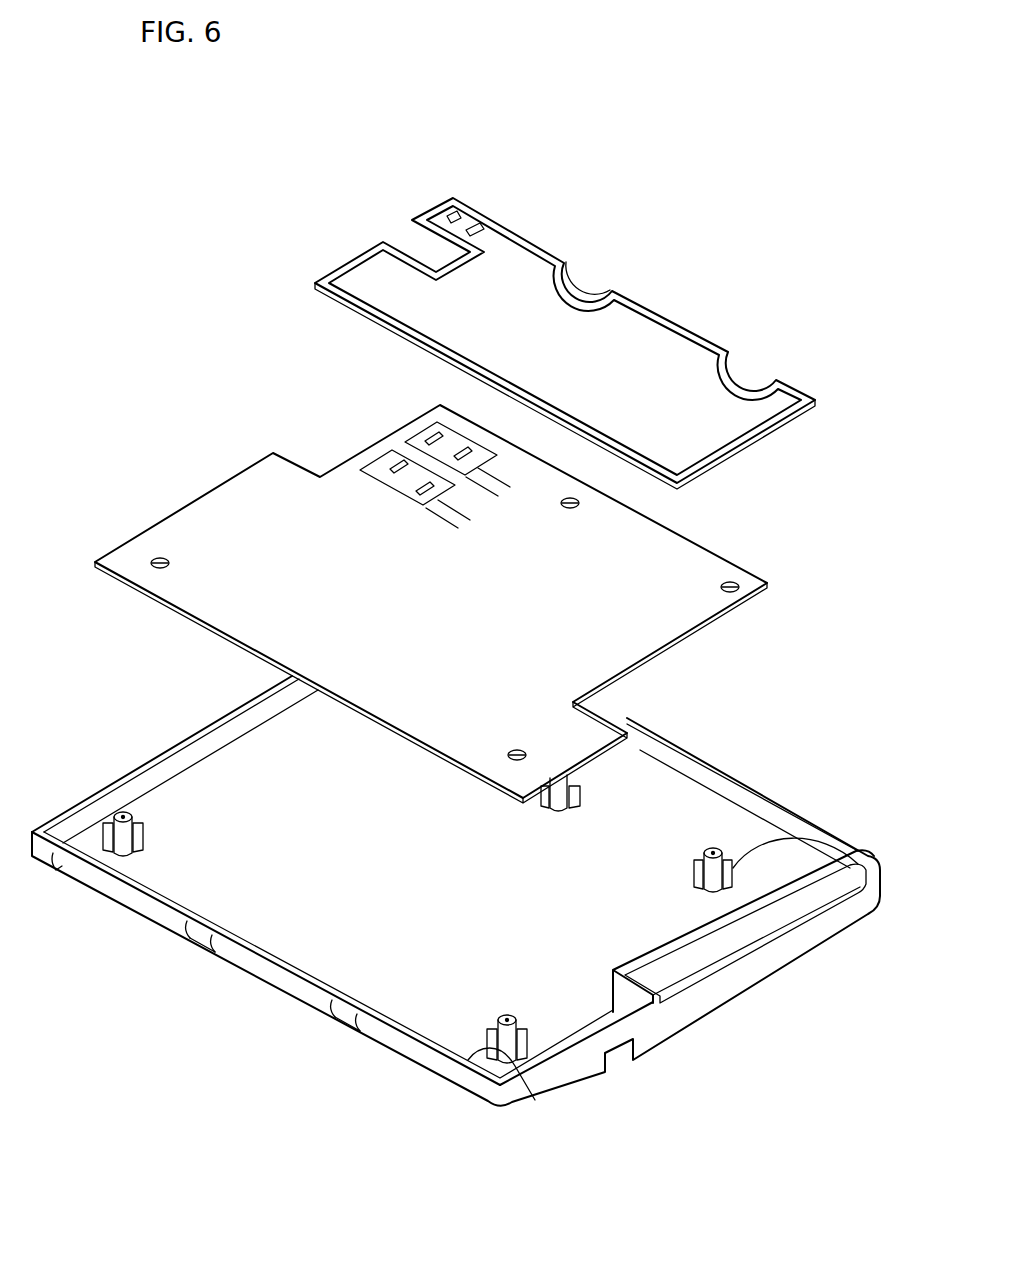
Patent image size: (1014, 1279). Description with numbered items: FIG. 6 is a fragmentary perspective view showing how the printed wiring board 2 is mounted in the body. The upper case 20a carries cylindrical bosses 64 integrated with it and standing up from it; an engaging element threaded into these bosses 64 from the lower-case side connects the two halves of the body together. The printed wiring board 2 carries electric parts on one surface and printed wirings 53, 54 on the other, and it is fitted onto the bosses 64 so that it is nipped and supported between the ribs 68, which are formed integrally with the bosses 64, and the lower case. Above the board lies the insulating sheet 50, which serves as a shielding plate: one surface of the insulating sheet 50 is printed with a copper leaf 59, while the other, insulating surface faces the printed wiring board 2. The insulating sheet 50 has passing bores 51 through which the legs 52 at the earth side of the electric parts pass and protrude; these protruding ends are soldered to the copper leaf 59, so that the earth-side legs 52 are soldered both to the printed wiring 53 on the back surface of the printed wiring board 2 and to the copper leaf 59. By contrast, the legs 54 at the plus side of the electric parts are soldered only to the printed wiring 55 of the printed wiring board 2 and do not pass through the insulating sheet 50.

The printed wiring board 2 is at (742, 567).
The upper case 20a is at (668, 1027).
The insulating sheet 50 is at (664, 311).
The passing bores 51 is at (453, 213).
The legs at the earth side 52 is at (430, 433).
The printed wiring 53 is at (453, 430).
The legs at the plus side 54 is at (384, 461).
The printed wiring 55 is at (406, 460).
The copper leaf 59 is at (543, 272).
The cylindrical bosses 64 is at (723, 847).
The ribs 68 is at (815, 845).